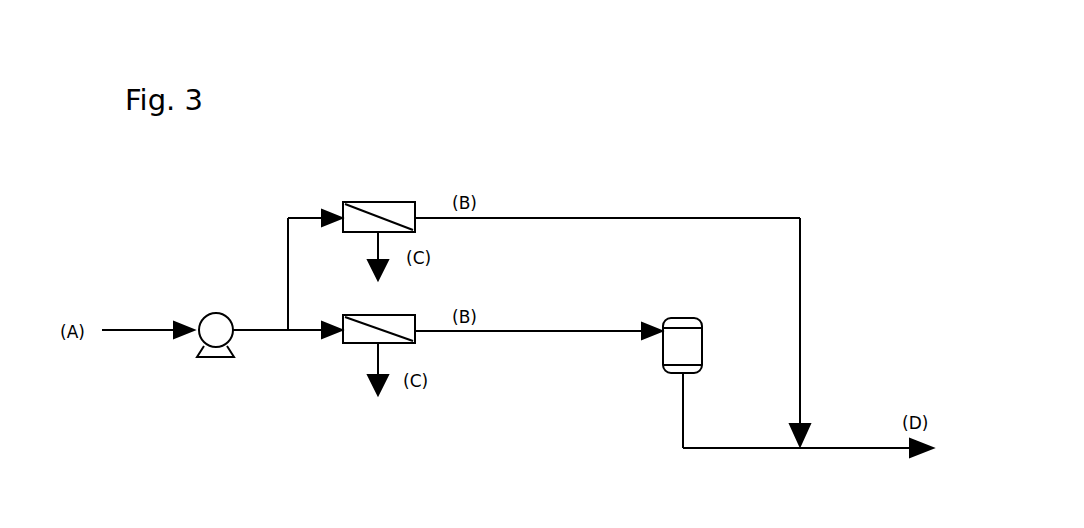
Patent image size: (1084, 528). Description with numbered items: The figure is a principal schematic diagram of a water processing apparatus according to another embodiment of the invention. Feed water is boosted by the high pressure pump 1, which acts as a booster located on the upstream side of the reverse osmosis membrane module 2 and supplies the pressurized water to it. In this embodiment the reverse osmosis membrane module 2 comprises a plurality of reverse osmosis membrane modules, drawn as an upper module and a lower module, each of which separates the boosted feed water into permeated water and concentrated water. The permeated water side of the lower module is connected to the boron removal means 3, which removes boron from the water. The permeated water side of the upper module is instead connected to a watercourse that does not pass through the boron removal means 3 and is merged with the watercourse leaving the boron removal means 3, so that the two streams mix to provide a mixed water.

The high pressure pump 1 is at (225, 313).
The reverse osmosis membrane module 2 is at (378, 201).
The boron removal means 3 is at (684, 317).